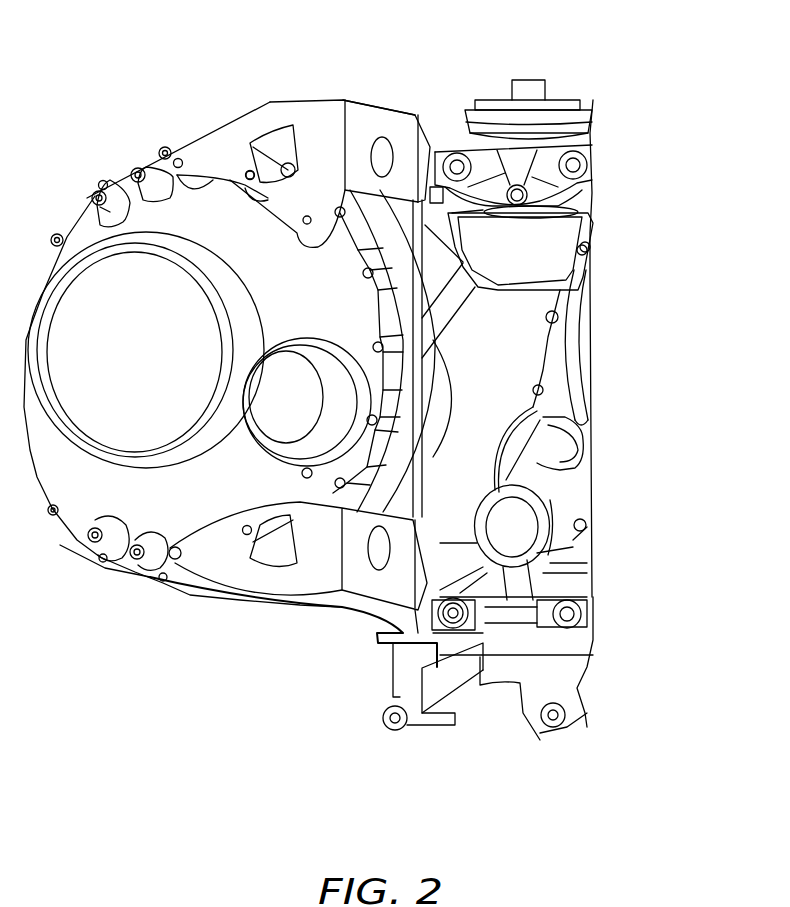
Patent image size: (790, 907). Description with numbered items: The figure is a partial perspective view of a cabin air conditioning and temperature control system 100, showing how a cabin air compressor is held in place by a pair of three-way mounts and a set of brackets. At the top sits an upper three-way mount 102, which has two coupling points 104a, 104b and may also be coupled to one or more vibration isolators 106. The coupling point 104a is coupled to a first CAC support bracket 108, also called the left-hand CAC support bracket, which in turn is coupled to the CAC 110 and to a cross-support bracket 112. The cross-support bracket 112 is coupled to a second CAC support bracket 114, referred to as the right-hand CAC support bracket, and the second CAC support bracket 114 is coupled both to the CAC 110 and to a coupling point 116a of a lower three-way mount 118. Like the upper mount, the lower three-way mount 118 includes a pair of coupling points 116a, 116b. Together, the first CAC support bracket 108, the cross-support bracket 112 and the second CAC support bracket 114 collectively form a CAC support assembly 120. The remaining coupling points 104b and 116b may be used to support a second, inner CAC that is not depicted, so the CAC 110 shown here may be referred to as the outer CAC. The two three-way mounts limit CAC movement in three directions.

The cabin air conditioning and temperature control system 100 is at (703, 142).
The upper three-way mount 102 is at (535, 173).
The coupling point 104a is at (588, 197).
The coupling point 104b is at (583, 167).
The vibration isolator 106 is at (487, 112).
The first cabin air compressor support bracket 108 is at (257, 110).
The cabin air compressor 110 is at (283, 254).
The cross-support bracket 112 is at (432, 238).
The second cabin air compressor support bracket 114 is at (347, 527).
The coupling point 116a is at (457, 630).
The coupling point 116b is at (582, 614).
The lower three-way mount 118 is at (519, 620).
The CAC support assembly 120 is at (318, 90).